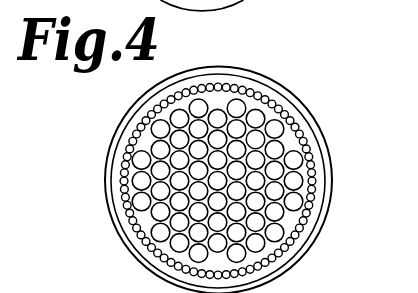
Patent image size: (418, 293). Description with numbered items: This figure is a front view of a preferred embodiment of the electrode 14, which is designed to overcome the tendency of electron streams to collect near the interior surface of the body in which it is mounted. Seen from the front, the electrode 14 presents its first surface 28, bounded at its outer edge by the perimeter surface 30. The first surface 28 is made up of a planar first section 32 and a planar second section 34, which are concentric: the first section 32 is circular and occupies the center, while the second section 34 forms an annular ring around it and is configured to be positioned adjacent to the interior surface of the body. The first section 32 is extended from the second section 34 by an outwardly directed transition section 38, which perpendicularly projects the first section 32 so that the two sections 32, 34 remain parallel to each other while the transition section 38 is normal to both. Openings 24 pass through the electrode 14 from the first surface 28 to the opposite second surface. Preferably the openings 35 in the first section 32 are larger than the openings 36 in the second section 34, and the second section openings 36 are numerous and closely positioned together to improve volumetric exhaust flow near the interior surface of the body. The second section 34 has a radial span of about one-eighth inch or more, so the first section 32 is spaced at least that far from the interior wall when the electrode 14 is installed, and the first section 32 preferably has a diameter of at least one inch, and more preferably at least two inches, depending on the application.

The electrode 14 is at (306, 110).
The openings 24 is at (256, 136).
The first surface 28 is at (288, 222).
The perimeter surface 30 is at (168, 189).
The first section 32 is at (141, 222).
The second section 34 is at (306, 240).
The openings in the first section 35 is at (134, 140).
The openings in the second section 36 is at (303, 143).
The transition section 38 is at (57, 287).